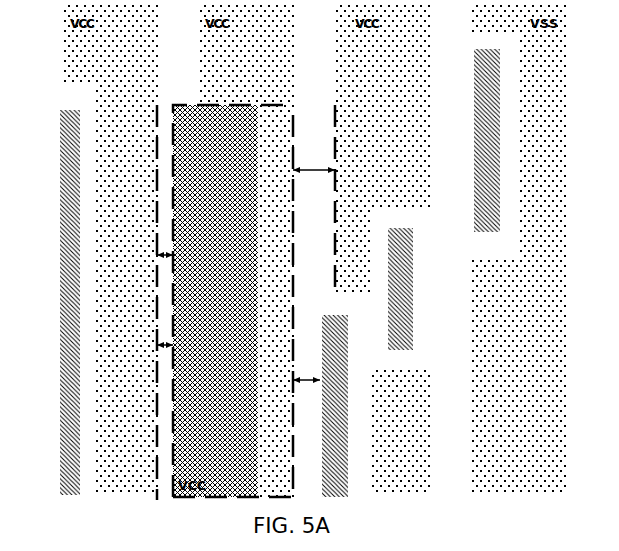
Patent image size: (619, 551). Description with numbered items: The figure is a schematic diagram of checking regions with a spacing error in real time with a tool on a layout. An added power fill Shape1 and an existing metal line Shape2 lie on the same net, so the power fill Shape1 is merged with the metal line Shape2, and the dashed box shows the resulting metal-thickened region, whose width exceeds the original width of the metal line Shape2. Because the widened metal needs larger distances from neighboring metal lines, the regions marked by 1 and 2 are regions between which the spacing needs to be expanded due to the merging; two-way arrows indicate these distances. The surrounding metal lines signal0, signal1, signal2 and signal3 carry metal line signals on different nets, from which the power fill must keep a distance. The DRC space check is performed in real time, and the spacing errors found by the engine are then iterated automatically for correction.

The region 1 is at (170, 343).
The region 2 is at (336, 300).
The power fill Shape1 is at (247, 251).
The existing metal line Shape2 is at (215, 301).
The metal line signal signal0 is at (51, 302).
The metal line signal signal1 is at (321, 406).
The metal line signal signal2 is at (416, 289).
The metal line signal signal3 is at (491, 140).